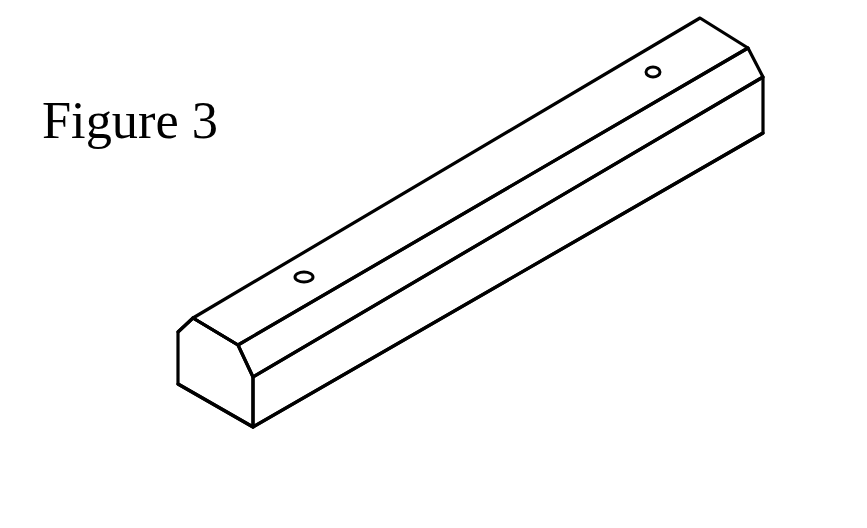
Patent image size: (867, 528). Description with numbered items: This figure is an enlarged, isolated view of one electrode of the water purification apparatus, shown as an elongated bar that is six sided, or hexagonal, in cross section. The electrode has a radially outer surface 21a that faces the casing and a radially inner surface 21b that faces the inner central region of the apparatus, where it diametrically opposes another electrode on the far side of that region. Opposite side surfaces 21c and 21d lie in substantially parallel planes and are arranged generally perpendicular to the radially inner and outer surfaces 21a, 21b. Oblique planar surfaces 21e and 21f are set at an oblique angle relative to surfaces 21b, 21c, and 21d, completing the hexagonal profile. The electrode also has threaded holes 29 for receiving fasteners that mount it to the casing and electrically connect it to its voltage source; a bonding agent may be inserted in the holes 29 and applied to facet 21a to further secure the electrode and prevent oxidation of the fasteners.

The radially outer surface 21a is at (208, 402).
The radially inner surface 21b is at (380, 220).
The side surface 21c is at (177, 358).
The side surface 21d is at (465, 280).
The oblique planar surface 21e is at (193, 318).
The oblique planar surface 21f is at (540, 185).
The threaded hole 29 is at (304, 277).